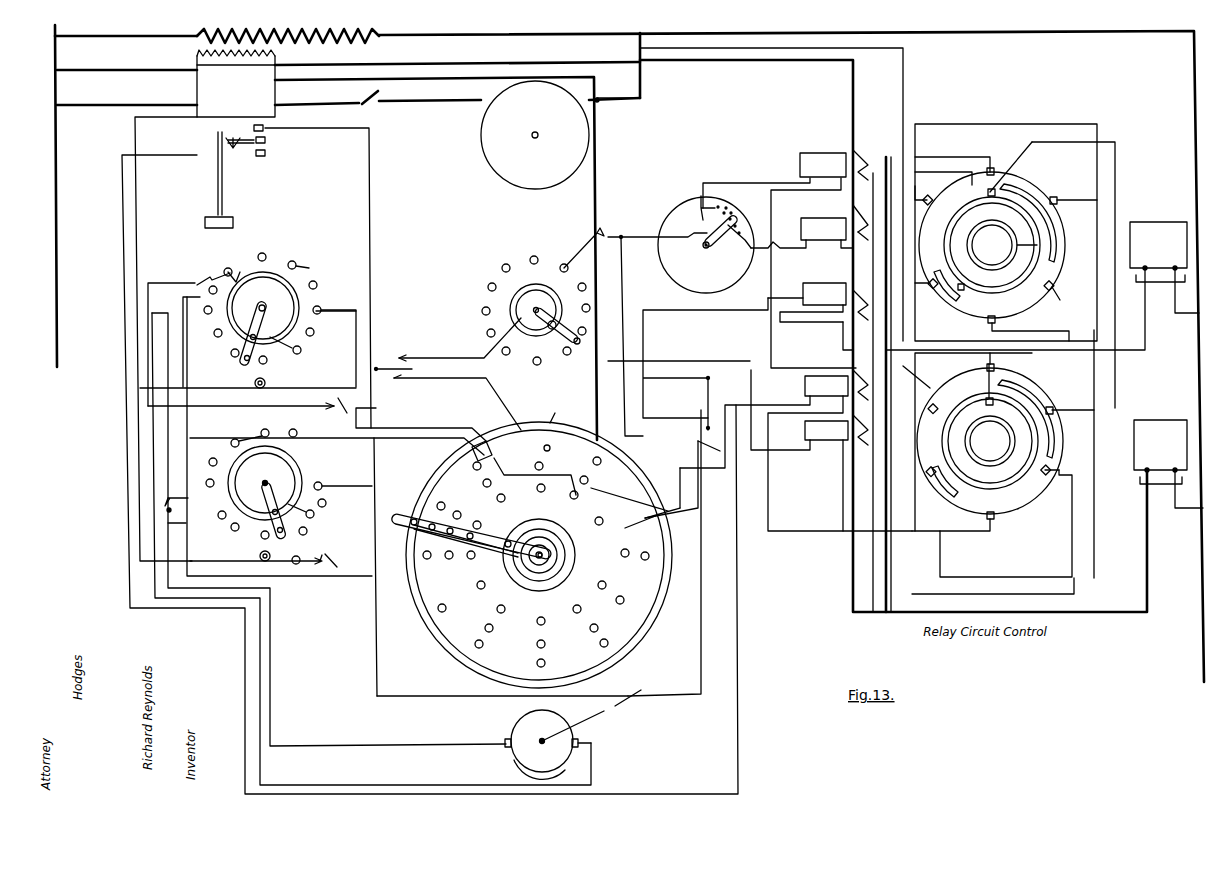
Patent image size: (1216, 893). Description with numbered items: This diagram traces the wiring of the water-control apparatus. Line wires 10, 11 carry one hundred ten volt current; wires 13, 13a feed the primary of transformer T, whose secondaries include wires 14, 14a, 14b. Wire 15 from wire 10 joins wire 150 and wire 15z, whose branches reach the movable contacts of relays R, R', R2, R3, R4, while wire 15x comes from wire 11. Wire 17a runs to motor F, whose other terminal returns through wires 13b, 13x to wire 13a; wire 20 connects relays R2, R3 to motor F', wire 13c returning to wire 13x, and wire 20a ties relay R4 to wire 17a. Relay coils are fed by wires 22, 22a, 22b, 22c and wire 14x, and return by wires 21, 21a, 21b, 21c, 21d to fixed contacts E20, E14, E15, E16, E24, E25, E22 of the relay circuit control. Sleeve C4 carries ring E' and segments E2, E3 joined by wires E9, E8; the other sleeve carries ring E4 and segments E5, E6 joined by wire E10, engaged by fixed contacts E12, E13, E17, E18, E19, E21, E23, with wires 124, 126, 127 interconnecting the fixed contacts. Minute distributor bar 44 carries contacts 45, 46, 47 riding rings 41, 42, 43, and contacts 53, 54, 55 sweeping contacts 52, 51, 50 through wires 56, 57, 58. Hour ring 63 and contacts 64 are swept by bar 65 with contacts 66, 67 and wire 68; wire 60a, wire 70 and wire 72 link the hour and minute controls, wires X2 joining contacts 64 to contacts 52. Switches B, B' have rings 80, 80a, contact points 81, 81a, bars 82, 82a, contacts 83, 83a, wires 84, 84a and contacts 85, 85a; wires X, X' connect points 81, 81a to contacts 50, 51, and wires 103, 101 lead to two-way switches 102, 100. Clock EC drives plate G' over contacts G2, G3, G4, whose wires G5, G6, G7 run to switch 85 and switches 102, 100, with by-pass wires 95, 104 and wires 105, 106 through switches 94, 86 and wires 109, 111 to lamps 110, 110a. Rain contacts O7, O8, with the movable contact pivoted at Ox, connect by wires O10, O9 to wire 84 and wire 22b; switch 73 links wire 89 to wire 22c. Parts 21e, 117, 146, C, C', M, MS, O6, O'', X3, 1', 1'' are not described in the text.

The line wire 10 is at (55, 158).
The line wire 11 is at (1203, 640).
The primary wire 13 is at (121, 36).
The primary wire 13a is at (790, 33).
The motor return wire 13b is at (1180, 314).
The motor return wire 13c is at (1176, 509).
The return wire 13x is at (1185, 162).
The secondary wire 14 is at (192, 100).
The secondary wire 14a is at (140, 250).
The secondary wire 14b is at (650, 48).
The relay wire 14x is at (428, 100).
The supply wire 15 is at (119, 69).
The connecting wire 150 is at (537, 63).
The supply wire 15x is at (641, 84).
The distribution wire 15z is at (852, 100).
The motor wire 17a is at (1146, 350).
The motor wire 20 is at (873, 565).
The relay wire 20a is at (870, 148).
The relay coil wire 21 is at (790, 195).
The branched relay wire 21a is at (1100, 592).
The relay coil wire 21b is at (843, 350).
The relay coil wire 21c is at (768, 490).
The relay coil wire 21d is at (840, 531).
The relay line 21e is at (898, 531).
The relay coil wire 22 is at (751, 183).
The relay coil wire 22a is at (803, 245).
The relay coil wire 22b is at (650, 404).
The relay coil wire 22c is at (772, 393).
The contact ring 41 is at (580, 560).
The contact ring 42 is at (580, 592).
The contact ring 43 is at (652, 627).
The distributor bar 44 is at (450, 515).
The contact 45 is at (516, 510).
The contact 46 is at (471, 621).
The contact 47 is at (392, 512).
The contacts 50 is at (545, 621).
The contacts 51 is at (630, 560).
The contacts 52 is at (550, 448).
The contact 53 is at (425, 535).
The contact 54 is at (468, 520).
The contact 55 is at (443, 558).
The wire 56 is at (430, 540).
The wire 57 is at (490, 540).
The wire 58 is at (468, 560).
The wire 60a is at (432, 357).
The contact ring 63 is at (505, 288).
The hour contacts 64 is at (562, 270).
The distributor bar 65 is at (583, 360).
The contact 66 is at (541, 342).
The contact 67 is at (572, 345).
The wire 68 is at (579, 319).
The wire 70 is at (380, 362).
The wire 72 is at (426, 379).
The switch 73 is at (698, 441).
The contact ring 80 is at (314, 333).
The contact ring 80a is at (313, 498).
The contact points 81 is at (314, 284).
The contact points 81a is at (250, 429).
The contact bar 82 is at (275, 380).
The contact bar 82a is at (307, 550).
The contact 83 is at (290, 350).
The contact 83a is at (316, 515).
The wire 84 is at (230, 350).
The wire 84a is at (250, 537).
The two-way switch contact 85 is at (247, 364).
The contact 85a is at (308, 534).
The switch 86 is at (320, 560).
The wire 89 is at (736, 578).
The switch 94 is at (340, 394).
The branch wire 95 is at (147, 408).
The two-way switch 100 is at (168, 498).
The wire 101 is at (228, 505).
The two-way switch 102 is at (200, 280).
The wire 103 is at (247, 266).
The wire 104 is at (163, 341).
The wire 105 is at (304, 424).
The wire 106 is at (292, 590).
The wire 109 is at (322, 568).
The lamp 110 is at (266, 563).
The lamp 110a is at (256, 393).
The wire 111 is at (248, 395).
The switch 117 is at (368, 104).
The branched wire 124 is at (1000, 124).
The wire 126 is at (1032, 147).
The wire 127 is at (935, 172).
The line 146 is at (975, 385).
The clock-operated switch B is at (269, 311).
The clock-operated switch B' is at (335, 436).
The relay drum C is at (989, 442).
The relay drum C' is at (992, 245).
The sleeve C4 is at (1009, 301).
The contact ring E' is at (991, 263).
The concentric contact E2 is at (961, 289).
The concentric contact E3 is at (1030, 192).
The contact ring E4 is at (990, 468).
The segmental contact E5 is at (1040, 441).
The segmental contact E6 is at (1025, 500).
The wire E8 is at (1015, 240).
The wire E9 is at (1020, 245).
The wire E10 is at (1002, 420).
The fixed contact E12 is at (988, 400).
The fixed contact E13 is at (992, 192).
The fixed contact E14 is at (990, 172).
The fixed contact E15 is at (932, 283).
The fixed contact E16 is at (1052, 286).
The fixed contact E17 is at (927, 200).
The fixed contact E18 is at (1000, 323).
The fixed contact E19 is at (1054, 200).
The fixed contact E20 is at (935, 410).
The fixed contact E21 is at (930, 470).
The fixed contact E22 is at (1045, 470).
The fixed contact E23 is at (1050, 410).
The fixed contact E24 is at (1000, 368).
The fixed contact E25 is at (995, 525).
The clock EC is at (485, 150).
The motor F is at (1042, 384).
The motor F' is at (1168, 451).
The contact plate G' is at (611, 753).
The fixed contact G2 is at (516, 738).
The fixed contact G3 is at (604, 727).
The fixed contact G4 is at (504, 748).
The wire G5 is at (595, 720).
The wire G6 is at (344, 785).
The wire G7 is at (190, 548).
The master switch arm M is at (698, 221).
The master switch MS is at (685, 208).
The rain control float O6 is at (234, 222).
The fixed contact O7 is at (245, 129).
The fixed contact O8 is at (265, 153).
The wire O9 is at (766, 623).
The wire O10 is at (369, 203).
The contact O'' is at (280, 141).
The pivot mounting Ox is at (210, 165).
The relay R is at (823, 165).
The relay R' is at (823, 229).
The relay R2 is at (824, 294).
The relay R3 is at (826, 384).
The relay R4 is at (826, 428).
The transformer T is at (347, 33).
The wires X is at (451, 420).
The wires X' is at (389, 567).
The wires X2 is at (630, 236).
The switch X3 is at (625, 298).
The relay contact 1' is at (865, 376).
The relay contact 1'' is at (847, 218).